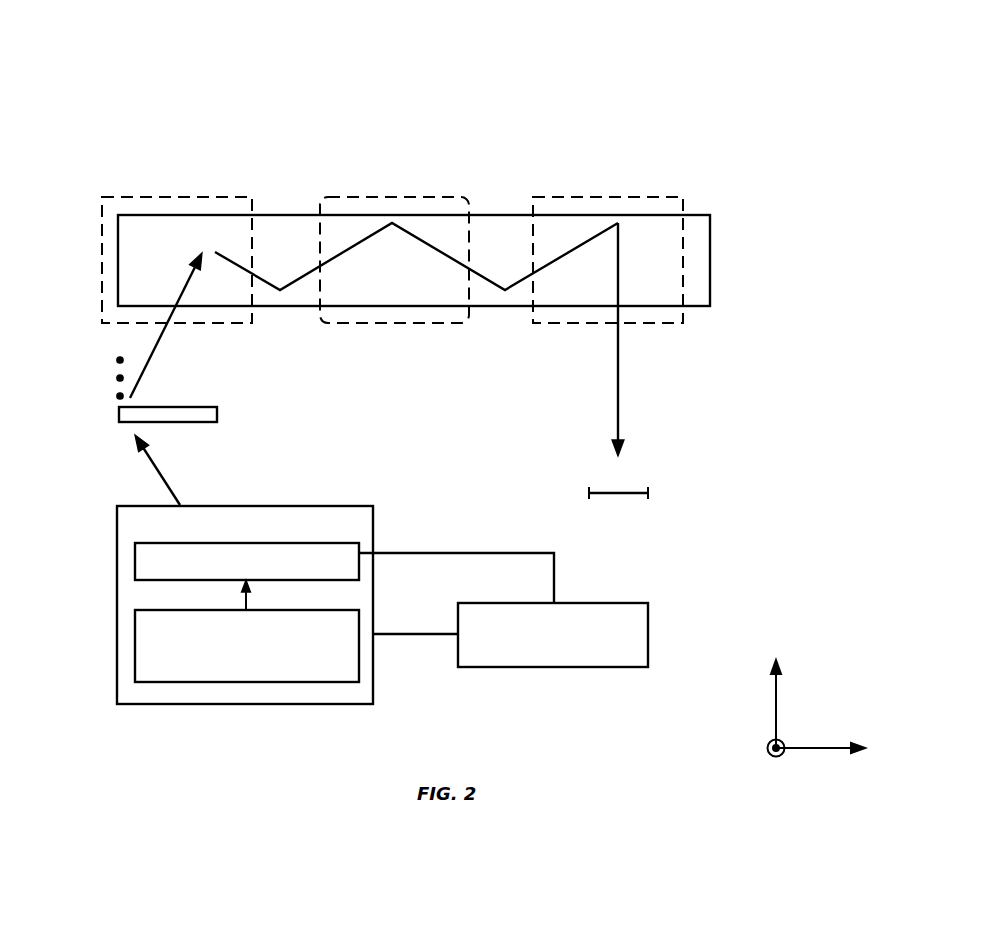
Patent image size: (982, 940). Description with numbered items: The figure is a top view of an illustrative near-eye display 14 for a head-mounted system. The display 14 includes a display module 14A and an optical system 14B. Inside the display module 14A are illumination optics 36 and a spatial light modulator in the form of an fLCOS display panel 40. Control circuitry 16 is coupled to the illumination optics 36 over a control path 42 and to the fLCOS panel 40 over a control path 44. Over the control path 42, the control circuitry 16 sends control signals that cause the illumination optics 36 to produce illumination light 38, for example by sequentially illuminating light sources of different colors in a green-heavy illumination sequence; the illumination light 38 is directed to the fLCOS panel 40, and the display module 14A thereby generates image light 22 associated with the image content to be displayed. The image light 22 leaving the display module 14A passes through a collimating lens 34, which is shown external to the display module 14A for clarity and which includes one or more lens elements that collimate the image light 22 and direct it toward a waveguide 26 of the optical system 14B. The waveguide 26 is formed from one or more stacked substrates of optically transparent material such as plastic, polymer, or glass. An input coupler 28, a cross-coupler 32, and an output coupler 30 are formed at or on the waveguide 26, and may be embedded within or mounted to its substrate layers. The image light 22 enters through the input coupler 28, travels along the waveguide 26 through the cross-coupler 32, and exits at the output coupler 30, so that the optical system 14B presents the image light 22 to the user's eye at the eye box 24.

The display 14 is at (630, 48).
The display module 14A is at (117, 530).
The optical system 14B is at (782, 158).
The control circuitry 16 is at (648, 632).
The image light 22 is at (153, 352).
The eye box 24 is at (620, 497).
The waveguide 26 is at (710, 262).
The input coupler 28 is at (172, 197).
The output coupler 30 is at (606, 197).
The cross-coupler 32 is at (392, 197).
The collimating lens 34 is at (222, 412).
The illumination optics 36 is at (135, 645).
The illumination light 38 is at (250, 597).
The fLCOS display panel 40 is at (359, 567).
The control path 42 is at (420, 636).
The control path 44 is at (437, 553).